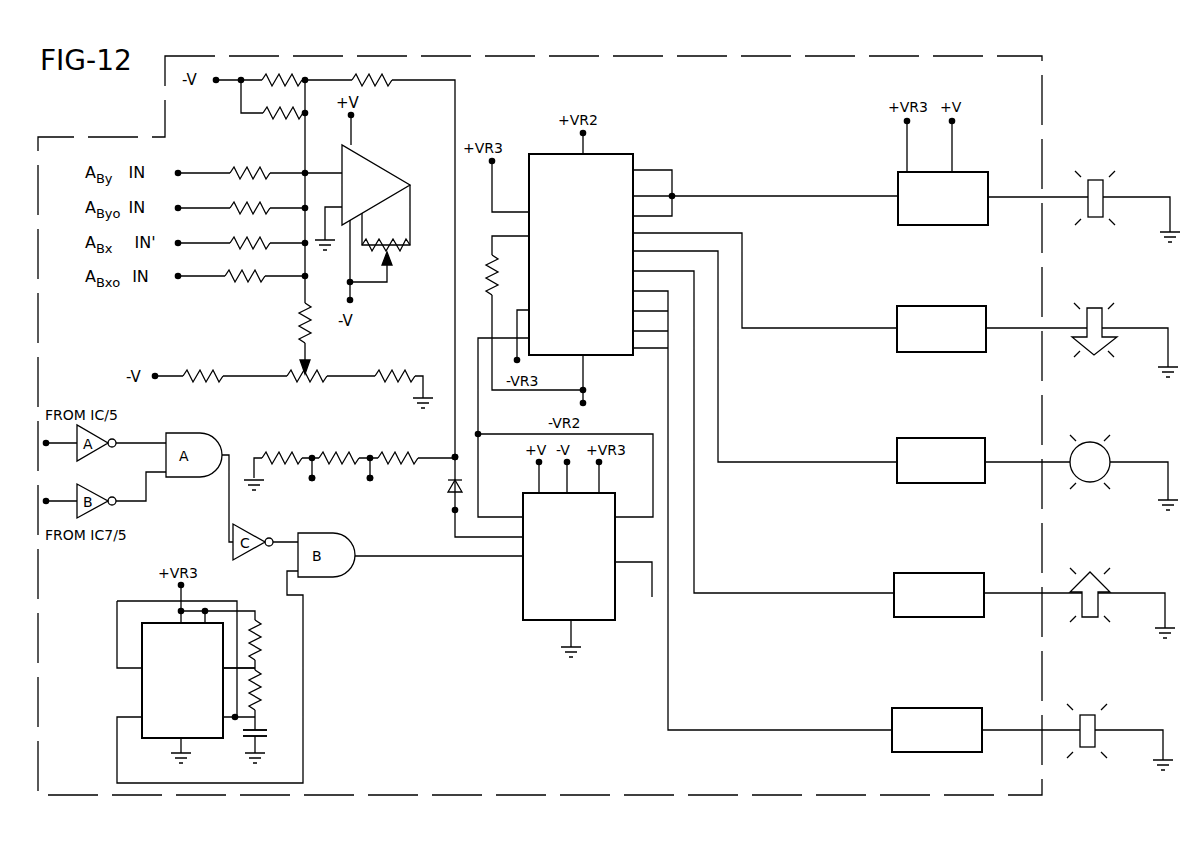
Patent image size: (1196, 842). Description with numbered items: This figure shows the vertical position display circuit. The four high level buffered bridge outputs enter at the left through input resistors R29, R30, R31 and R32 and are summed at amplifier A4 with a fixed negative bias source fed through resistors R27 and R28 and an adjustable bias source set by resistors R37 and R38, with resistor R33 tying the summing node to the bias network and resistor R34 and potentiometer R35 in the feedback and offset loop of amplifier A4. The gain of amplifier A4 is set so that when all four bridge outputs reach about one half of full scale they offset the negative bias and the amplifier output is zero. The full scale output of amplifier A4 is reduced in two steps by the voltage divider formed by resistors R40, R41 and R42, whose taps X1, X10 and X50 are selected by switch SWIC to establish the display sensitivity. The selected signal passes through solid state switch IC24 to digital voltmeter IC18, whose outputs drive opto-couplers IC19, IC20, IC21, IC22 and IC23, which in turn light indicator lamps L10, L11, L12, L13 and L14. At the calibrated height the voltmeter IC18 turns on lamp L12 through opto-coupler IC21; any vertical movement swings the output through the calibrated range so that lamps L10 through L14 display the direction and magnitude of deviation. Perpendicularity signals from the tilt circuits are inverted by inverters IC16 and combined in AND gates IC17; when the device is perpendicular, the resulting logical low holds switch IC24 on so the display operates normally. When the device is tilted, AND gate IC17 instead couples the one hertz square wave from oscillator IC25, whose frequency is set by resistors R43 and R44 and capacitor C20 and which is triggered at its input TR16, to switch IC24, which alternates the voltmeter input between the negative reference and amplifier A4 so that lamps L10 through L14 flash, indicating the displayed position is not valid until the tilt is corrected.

The fixed bias source resistor R27 is at (282, 72).
The fixed bias source resistor R28 is at (283, 105).
The resistor R29 is at (250, 164).
The resistor R30 is at (250, 199).
The resistor R31 is at (250, 234).
The resistor R32 is at (252, 269).
The resistor R33 is at (282, 323).
The resistor R34 is at (385, 72).
The potentiometer R35 is at (386, 236).
The adjustable bias source resistor R37 is at (317, 367).
The adjustable bias source resistor R38 is at (395, 367).
The amplifier A4 is at (376, 185).
The inverter IC16 is at (175, 492).
The AND gate IC17 is at (260, 496).
The digital voltmeter IC18 is at (581, 255).
The opto-coupler IC19 is at (943, 198).
The opto-coupler IC20 is at (941, 329).
The opto-coupler IC21 is at (941, 460).
The opto-coupler IC22 is at (939, 595).
The opto-coupler IC23 is at (937, 730).
The solid state switch IC24 is at (569, 556).
The oscillator IC25 is at (182, 680).
The trigger input TR16 is at (202, 673).
The voltage divider resistor R40 is at (398, 447).
The voltage divider resistor R41 is at (339, 447).
The voltage divider resistor R42 is at (280, 447).
The frequency setting resistor R43 is at (264, 636).
The frequency setting resistor R44 is at (264, 687).
The capacitor C20 is at (270, 736).
The range tap x1 X1 is at (312, 488).
The range tap x10 X10 is at (368, 488).
The range tap x50 X50 is at (431, 468).
The switch SWIC is at (424, 503).
The indicator lamp L10 is at (1084, 199).
The indicator lamp L11 is at (1082, 331).
The indicator lamp L12 is at (1081, 472).
The indicator lamp L13 is at (1079, 606).
The indicator lamp L14 is at (1077, 741).